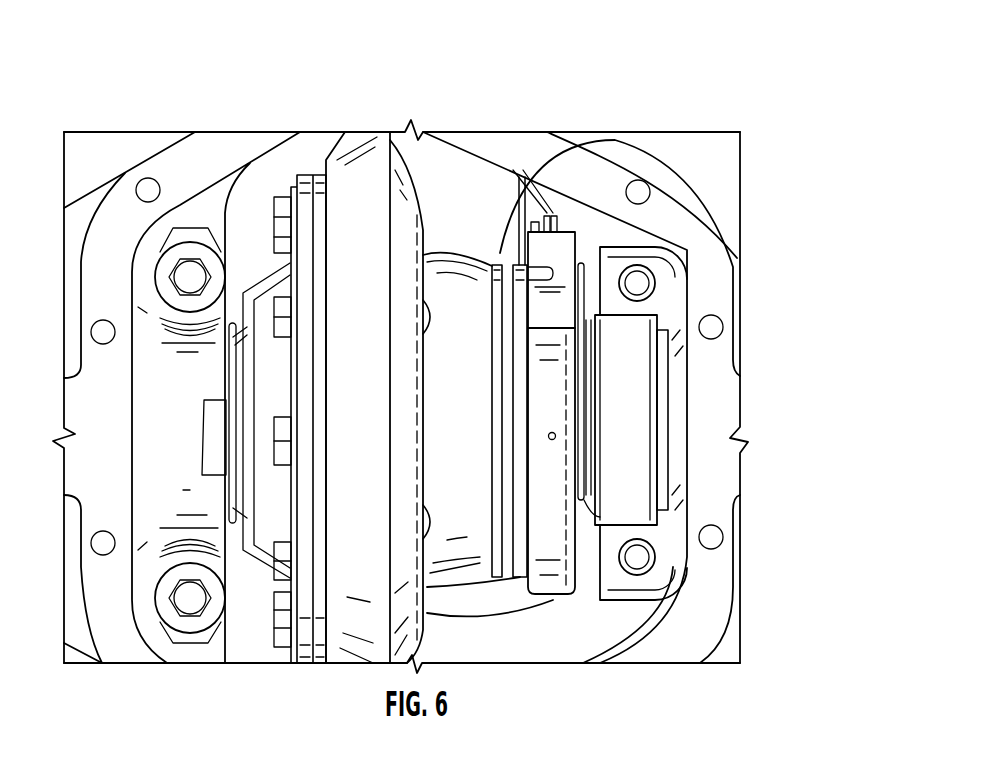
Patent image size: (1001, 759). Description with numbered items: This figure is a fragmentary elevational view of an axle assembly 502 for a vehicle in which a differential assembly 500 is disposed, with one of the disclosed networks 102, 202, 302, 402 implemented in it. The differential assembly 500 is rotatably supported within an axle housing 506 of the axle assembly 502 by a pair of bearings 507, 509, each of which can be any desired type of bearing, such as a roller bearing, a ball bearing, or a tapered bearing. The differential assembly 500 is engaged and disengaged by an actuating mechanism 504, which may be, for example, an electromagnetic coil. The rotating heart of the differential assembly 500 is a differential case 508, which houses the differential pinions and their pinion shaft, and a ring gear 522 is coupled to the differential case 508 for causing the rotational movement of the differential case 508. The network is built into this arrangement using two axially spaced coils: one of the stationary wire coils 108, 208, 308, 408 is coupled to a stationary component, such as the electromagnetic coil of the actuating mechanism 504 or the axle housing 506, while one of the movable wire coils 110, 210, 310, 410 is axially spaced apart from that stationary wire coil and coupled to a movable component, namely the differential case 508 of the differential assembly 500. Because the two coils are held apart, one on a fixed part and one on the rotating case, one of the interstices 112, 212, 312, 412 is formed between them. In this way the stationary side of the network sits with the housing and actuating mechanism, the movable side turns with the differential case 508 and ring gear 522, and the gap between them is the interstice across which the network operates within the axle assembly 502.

The differential assembly 500 is at (445, 283).
The axle assembly 502 is at (637, 158).
The actuating mechanism 504 is at (557, 488).
The axle housing 506 is at (660, 188).
The bearing 507 is at (160, 347).
The differential case 508 is at (472, 207).
The bearing 509 is at (622, 412).
The ring gear 522 is at (358, 155).
The network 102 is at (680, 166).
The network 202 is at (680, 166).
The network 302 is at (680, 166).
The network 402 is at (515, 220).
The stationary wire coil 108 is at (734, 244).
The stationary wire coil 208 is at (734, 244).
The stationary wire coil 308 is at (734, 244).
The stationary wire coil 408 is at (545, 272).
The movable wire coil 110 is at (636, 123).
The movable wire coil 210 is at (636, 123).
The movable wire coil 310 is at (636, 123).
The movable wire coil 410 is at (518, 182).
The interstice 112 is at (726, 401).
The interstice 212 is at (726, 401).
The interstice 312 is at (726, 401).
The interstice 412 is at (512, 365).